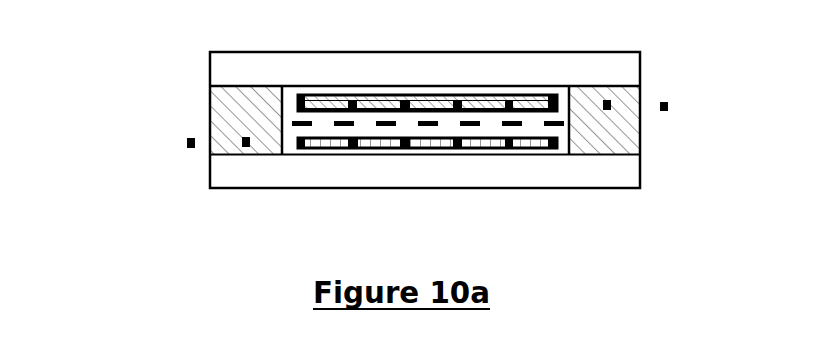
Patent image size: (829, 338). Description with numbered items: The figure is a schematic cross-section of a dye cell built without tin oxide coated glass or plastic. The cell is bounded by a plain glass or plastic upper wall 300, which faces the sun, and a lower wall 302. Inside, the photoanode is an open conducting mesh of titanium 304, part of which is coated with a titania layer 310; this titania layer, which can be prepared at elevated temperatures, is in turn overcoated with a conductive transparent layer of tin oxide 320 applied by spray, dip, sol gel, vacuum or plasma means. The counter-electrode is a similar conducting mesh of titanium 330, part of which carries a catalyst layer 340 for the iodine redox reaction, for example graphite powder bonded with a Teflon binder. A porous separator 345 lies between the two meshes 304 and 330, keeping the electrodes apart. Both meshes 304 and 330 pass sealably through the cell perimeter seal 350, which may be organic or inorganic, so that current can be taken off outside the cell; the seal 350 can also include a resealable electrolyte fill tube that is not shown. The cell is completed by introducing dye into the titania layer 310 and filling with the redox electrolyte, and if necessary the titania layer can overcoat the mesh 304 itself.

The upper wall 300 is at (590, 72).
The lower wall 302 is at (578, 167).
The conducting mesh of titanium 304 is at (668, 100).
The titania layer 310 is at (427, 105).
The conductive transparent layer of tin oxide 320 is at (375, 98).
The conducting mesh of titanium 330 is at (183, 145).
The catalyst layer 340 is at (477, 143).
The porous separator 345 is at (428, 124).
The cell perimeter seal 350 is at (238, 115).